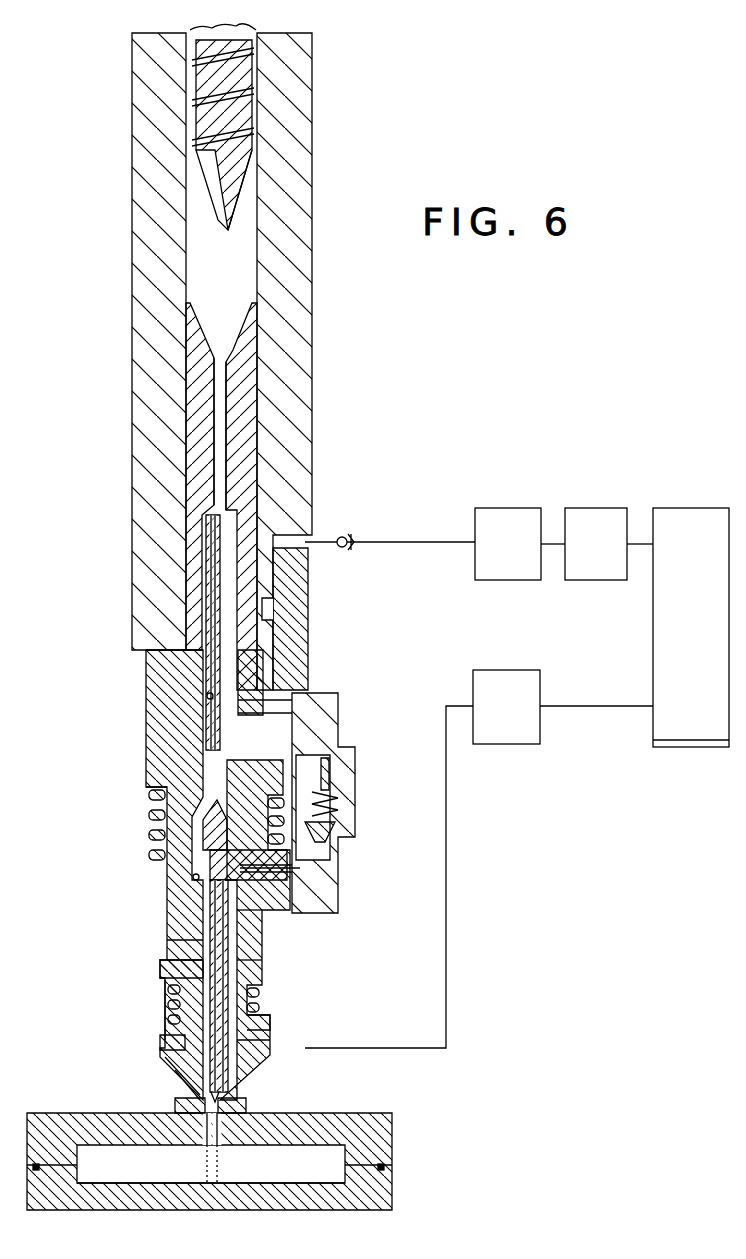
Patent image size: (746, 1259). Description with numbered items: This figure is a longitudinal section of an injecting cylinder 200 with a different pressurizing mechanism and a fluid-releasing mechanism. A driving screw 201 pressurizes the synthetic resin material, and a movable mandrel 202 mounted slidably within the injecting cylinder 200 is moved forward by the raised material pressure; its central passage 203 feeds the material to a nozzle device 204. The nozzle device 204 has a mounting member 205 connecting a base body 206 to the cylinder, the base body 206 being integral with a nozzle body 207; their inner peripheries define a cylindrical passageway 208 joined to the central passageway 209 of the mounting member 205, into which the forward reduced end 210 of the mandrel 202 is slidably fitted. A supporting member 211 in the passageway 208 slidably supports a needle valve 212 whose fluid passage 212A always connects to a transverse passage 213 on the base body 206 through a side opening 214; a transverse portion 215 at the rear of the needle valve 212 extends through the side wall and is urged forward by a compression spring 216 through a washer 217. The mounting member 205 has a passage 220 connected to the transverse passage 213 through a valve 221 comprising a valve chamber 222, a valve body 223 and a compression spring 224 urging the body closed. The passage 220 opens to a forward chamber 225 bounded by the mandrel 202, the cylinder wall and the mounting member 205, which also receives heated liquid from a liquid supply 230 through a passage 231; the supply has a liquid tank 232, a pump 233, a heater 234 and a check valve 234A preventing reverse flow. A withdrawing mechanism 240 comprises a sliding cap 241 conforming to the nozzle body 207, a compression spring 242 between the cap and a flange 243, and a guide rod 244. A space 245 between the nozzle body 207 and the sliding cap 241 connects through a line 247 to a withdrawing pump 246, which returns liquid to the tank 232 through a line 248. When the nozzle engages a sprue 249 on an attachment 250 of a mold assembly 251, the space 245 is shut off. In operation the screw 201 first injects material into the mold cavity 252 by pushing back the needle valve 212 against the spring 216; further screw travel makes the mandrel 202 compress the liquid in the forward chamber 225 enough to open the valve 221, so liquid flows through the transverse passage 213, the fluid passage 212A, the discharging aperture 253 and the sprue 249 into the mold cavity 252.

The injecting cylinder 200 is at (300, 148).
The driving screw 201 is at (258, 100).
The movable mandrel 202 is at (253, 405).
The central passage 203 is at (220, 443).
The nozzle device 204 is at (158, 920).
The mounting member 205 is at (152, 720).
The base body 206 is at (170, 935).
The nozzle body 207 is at (270, 1032).
The cylindrical passageway 208 is at (193, 877).
The central passageway 209 is at (207, 696).
The forward reduced end 210 is at (215, 580).
The supporting member 211 is at (230, 935).
The needle valve 212 is at (250, 985).
The fluid passage 212A is at (230, 960).
The transverse passage 213 is at (237, 915).
The side opening 214 is at (212, 895).
The transverse portion 215 is at (275, 870).
The compression spring 216 is at (152, 815).
The washer 217 is at (152, 850).
The passage 220 is at (270, 667).
The valve 221 is at (357, 810).
The valve chamber 222 is at (340, 795).
The valve body 223 is at (335, 765).
The compression spring 224 is at (338, 825).
The forward chamber 225 is at (262, 580).
The liquid supply 230 is at (690, 506).
The passage 231 is at (272, 600).
The liquid tank 232 is at (657, 748).
The pump 233 is at (570, 508).
The heater 234 is at (480, 508).
The check valve 234A is at (348, 535).
The withdrawing mechanism 240 is at (156, 1042).
The sliding cap 241 is at (182, 1070).
The compression spring 242 is at (258, 1010).
The flange 243 is at (168, 965).
The guide rod 244 is at (166, 1005).
The space 245 is at (185, 1090).
The withdrawing pump 246 is at (483, 745).
The line 247 is at (446, 925).
The line 248 is at (610, 706).
The sprue 249 is at (212, 1140).
The attachment 250 is at (248, 1105).
The mold assembly 251 is at (397, 1143).
The mold cavity 252 is at (258, 1183).
The discharging aperture 253 is at (225, 1095).